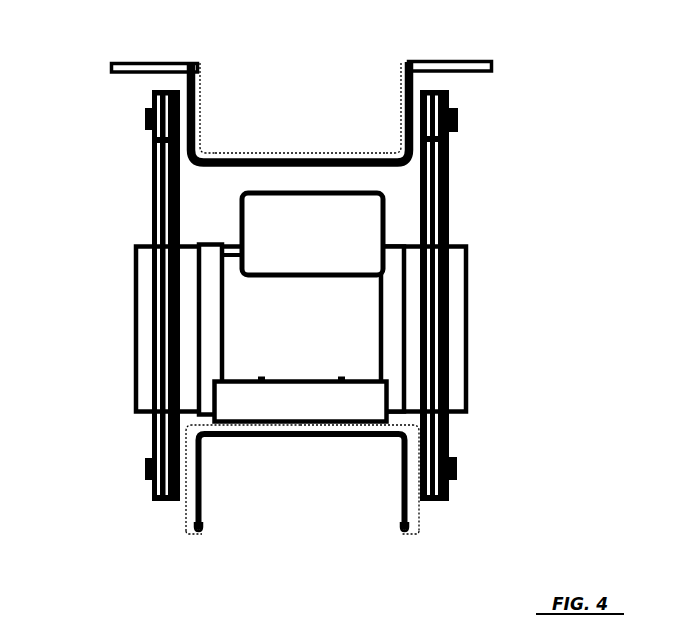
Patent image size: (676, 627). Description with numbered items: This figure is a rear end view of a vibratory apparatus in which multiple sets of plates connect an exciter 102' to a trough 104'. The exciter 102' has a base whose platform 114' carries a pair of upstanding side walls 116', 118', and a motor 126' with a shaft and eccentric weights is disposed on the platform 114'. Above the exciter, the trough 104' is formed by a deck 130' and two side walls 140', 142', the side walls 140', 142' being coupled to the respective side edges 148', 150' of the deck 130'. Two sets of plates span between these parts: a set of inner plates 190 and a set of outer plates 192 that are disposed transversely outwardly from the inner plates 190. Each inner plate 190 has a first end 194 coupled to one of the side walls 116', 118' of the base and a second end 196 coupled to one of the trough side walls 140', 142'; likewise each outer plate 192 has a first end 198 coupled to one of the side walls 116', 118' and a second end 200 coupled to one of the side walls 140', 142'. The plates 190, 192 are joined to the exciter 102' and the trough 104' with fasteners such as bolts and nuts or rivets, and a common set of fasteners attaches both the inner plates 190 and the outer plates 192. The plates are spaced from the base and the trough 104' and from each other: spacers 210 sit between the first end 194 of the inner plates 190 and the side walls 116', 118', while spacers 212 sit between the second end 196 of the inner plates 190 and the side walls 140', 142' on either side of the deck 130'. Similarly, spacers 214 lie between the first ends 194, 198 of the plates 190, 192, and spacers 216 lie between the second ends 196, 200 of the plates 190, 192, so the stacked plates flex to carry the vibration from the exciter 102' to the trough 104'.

The exciter 102' is at (353, 340).
The trough 104' is at (306, 290).
The platform 114' is at (301, 442).
The side wall 116' is at (243, 479).
The side wall 118' is at (359, 479).
The motor 126' is at (324, 224).
The deck 130' is at (300, 108).
The side wall 140' is at (226, 105).
The side wall 142' is at (371, 101).
The side edge 148' is at (227, 131).
The side edge 150' is at (371, 131).
The inner plates 190 is at (302, 298).
The outer plates 192 is at (168, 215).
The first end 194 is at (168, 502).
The second end 196 is at (150, 130).
The first end 198 is at (151, 488).
The second end 200 is at (152, 98).
The spacers 210 is at (200, 522).
The spacers 212 is at (182, 88).
The spacers 214 is at (144, 468).
The spacers 216 is at (146, 118).